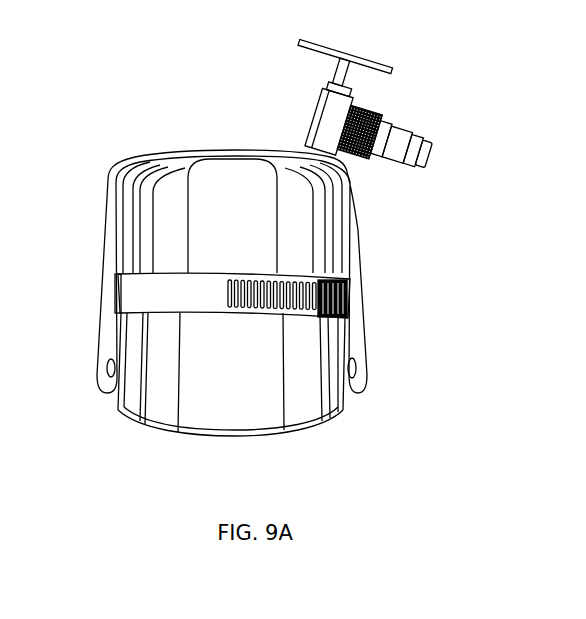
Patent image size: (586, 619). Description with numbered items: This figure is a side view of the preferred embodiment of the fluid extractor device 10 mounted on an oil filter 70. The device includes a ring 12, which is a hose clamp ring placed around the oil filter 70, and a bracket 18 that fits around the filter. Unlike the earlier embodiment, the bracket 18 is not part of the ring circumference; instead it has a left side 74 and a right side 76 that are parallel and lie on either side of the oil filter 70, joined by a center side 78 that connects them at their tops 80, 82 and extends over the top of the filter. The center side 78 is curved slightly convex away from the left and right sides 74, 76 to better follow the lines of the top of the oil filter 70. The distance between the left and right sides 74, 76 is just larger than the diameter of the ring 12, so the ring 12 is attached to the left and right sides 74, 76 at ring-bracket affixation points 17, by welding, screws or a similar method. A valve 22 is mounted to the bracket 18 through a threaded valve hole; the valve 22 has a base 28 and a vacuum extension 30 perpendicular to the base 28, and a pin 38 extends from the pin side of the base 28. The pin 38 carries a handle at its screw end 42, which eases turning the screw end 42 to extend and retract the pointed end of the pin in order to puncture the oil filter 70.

The fluid extractor device 10 is at (112, 125).
The ring 12 is at (325, 305).
The ring-bracket affixation points 17 is at (115, 297).
The bracket 18 is at (363, 250).
The valve 22 is at (428, 110).
The base 28 is at (333, 132).
The vacuum extension 30 is at (428, 155).
The pin 38 is at (353, 81).
The screw end 42 is at (350, 58).
The oil filter 70 is at (133, 248).
The left side 74 is at (97, 373).
The right side 76 is at (363, 368).
The center side 78 is at (203, 150).
The top of left side 80 is at (120, 170).
The top of right side 82 is at (347, 177).